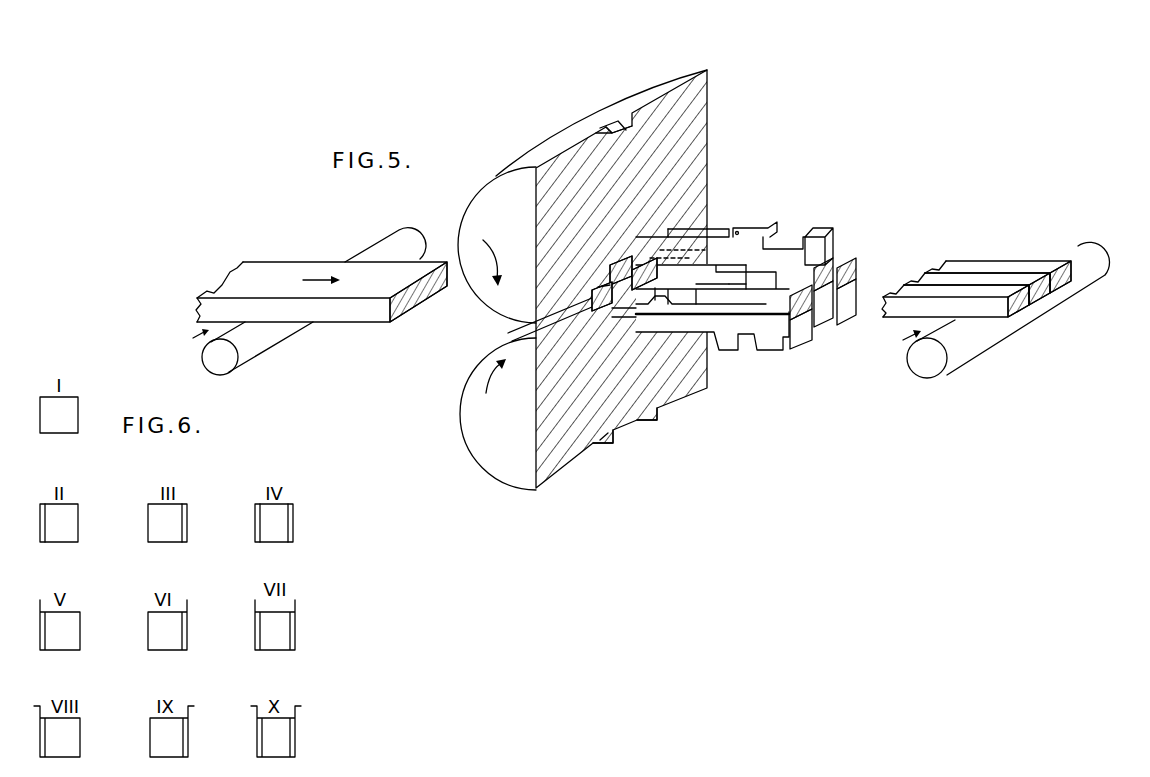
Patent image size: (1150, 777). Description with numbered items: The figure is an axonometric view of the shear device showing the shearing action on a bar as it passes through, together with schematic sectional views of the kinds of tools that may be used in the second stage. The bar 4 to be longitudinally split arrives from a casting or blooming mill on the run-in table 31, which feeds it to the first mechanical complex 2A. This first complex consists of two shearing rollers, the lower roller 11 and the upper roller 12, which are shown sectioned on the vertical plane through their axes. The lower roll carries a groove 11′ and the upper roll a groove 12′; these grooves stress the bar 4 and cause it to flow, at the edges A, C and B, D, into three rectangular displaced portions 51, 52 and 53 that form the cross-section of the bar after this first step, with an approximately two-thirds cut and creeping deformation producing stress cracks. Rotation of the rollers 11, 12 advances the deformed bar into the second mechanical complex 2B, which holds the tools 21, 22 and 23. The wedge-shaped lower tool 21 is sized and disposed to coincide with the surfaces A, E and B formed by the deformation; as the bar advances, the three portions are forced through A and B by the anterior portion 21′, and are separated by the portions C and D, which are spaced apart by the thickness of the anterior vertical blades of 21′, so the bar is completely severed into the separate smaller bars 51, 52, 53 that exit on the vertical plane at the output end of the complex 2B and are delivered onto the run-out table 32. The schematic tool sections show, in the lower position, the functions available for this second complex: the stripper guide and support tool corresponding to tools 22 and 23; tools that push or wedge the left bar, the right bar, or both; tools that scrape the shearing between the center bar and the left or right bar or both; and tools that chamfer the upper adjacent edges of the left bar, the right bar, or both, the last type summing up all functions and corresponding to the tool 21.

The first mechanical complex 2A is at (644, 80).
The second mechanical complex 2B is at (839, 183).
The bar 4 is at (362, 292).
The lower shearing roller 11 is at (467, 393).
The groove of the lower roll 11′ is at (645, 422).
The upper shearing roller 12 is at (473, 270).
The groove of the upper roll 12′ is at (610, 113).
The lower tool 21 is at (826, 318).
The anterior portion of tool 21 21′ is at (739, 284).
The tool 22 is at (798, 332).
The tool 23 is at (826, 243).
The run-in table 31 is at (275, 337).
The run-out table 32 is at (1075, 249).
The displaced portion 51 is at (586, 291).
The displaced portion 52 is at (957, 278).
The displaced portion 53 is at (967, 263).
The edge/surface A is at (597, 312).
The edge/surface B is at (624, 350).
The edge/portion C is at (612, 272).
The edge/portion D is at (642, 262).
The surface E is at (617, 318).